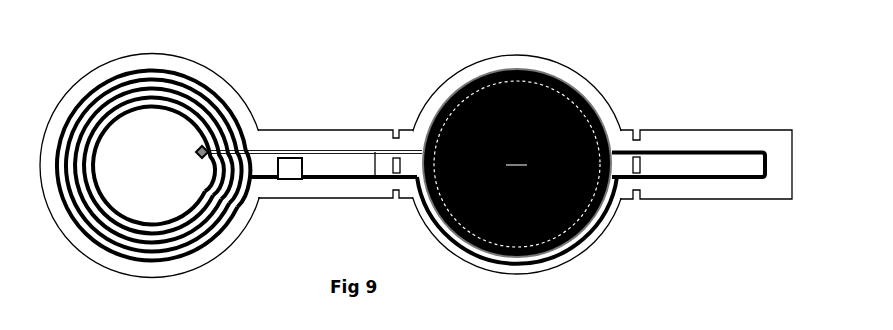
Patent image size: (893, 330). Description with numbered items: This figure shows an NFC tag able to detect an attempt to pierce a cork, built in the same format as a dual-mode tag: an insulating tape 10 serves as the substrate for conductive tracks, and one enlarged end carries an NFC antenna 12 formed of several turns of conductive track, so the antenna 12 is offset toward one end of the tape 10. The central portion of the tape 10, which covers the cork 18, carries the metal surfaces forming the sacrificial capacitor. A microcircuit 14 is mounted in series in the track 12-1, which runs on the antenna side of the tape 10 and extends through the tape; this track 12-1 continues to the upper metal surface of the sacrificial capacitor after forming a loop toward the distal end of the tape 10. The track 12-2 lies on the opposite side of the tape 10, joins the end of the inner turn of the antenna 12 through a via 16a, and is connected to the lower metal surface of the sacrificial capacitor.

The tape 10 is at (338, 137).
The NFC antenna 12 is at (168, 70).
The track 12-1 is at (328, 181).
The track 12-2 is at (375, 178).
The microcircuit 14 is at (290, 157).
The via 16a is at (200, 158).
The cork 18 is at (538, 248).